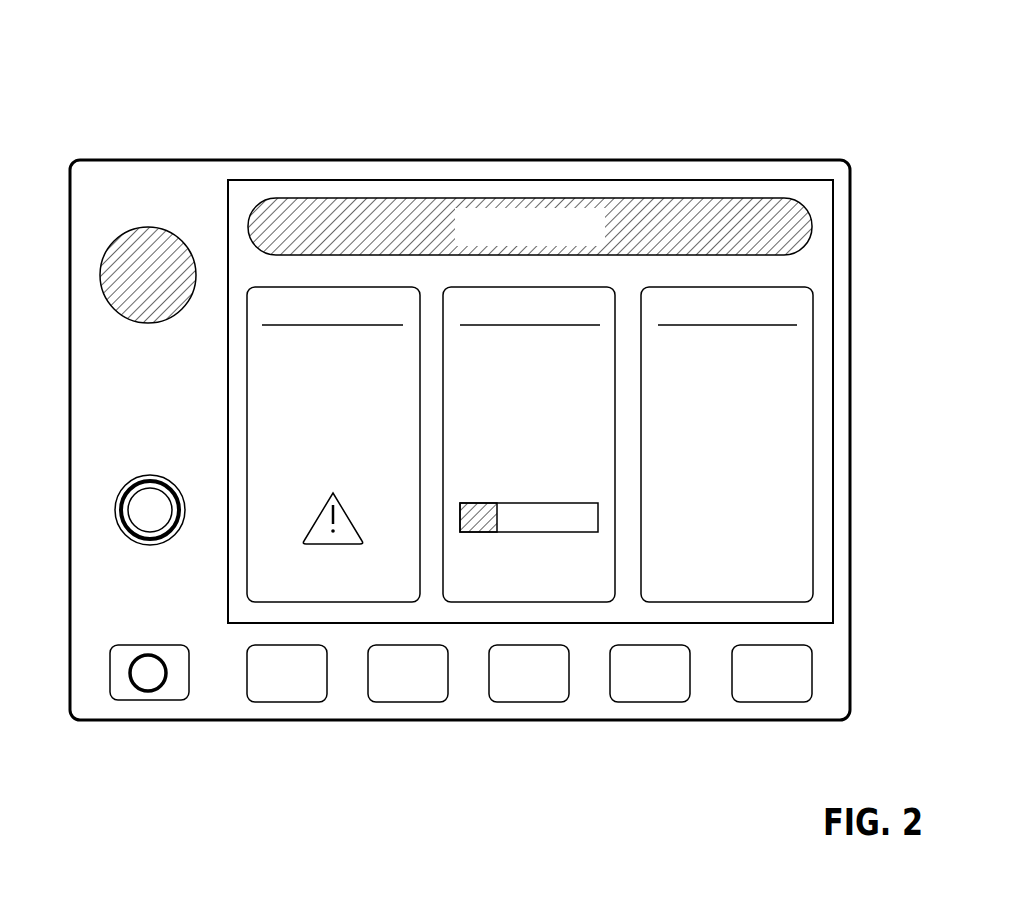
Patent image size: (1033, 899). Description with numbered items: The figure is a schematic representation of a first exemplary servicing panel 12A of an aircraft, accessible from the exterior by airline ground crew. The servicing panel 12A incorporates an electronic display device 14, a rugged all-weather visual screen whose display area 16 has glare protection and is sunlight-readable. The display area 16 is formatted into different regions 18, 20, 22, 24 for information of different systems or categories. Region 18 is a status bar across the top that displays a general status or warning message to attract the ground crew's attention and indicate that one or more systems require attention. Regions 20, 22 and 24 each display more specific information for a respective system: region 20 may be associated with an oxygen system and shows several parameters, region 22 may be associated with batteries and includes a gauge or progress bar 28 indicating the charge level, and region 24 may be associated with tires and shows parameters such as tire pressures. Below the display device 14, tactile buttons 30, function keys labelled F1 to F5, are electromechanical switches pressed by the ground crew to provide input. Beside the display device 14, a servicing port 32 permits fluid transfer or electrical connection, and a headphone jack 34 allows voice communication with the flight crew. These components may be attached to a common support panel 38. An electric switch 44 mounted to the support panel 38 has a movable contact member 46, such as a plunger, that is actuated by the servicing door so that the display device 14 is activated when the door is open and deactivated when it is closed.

The servicing panel 12A is at (196, 50).
The electronic display device 14 is at (832, 380).
The display area 16 is at (583, 398).
The region 18 is at (560, 215).
The region 20 is at (405, 590).
The region 22 is at (681, 444).
The region 24 is at (797, 590).
The gauge or progress bar 28 is at (480, 518).
The tactile buttons 30 is at (287, 702).
The servicing port 32 is at (108, 262).
The headphone jack 34 is at (138, 513).
The support panel 38 is at (107, 413).
The electric switch 44 is at (98, 710).
The movable contact member 46 is at (147, 682).